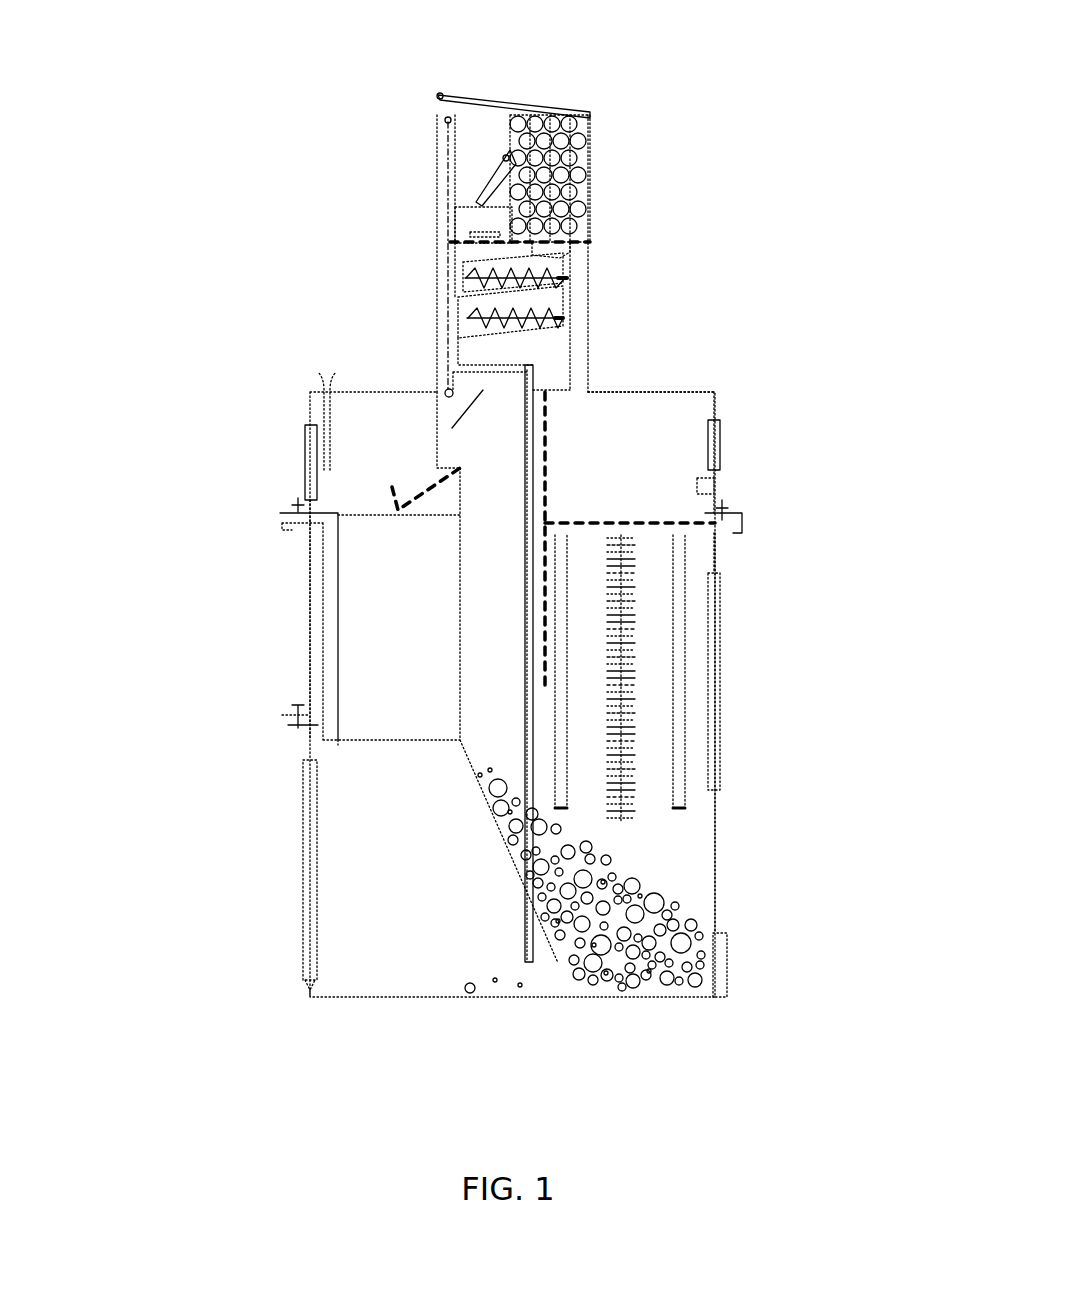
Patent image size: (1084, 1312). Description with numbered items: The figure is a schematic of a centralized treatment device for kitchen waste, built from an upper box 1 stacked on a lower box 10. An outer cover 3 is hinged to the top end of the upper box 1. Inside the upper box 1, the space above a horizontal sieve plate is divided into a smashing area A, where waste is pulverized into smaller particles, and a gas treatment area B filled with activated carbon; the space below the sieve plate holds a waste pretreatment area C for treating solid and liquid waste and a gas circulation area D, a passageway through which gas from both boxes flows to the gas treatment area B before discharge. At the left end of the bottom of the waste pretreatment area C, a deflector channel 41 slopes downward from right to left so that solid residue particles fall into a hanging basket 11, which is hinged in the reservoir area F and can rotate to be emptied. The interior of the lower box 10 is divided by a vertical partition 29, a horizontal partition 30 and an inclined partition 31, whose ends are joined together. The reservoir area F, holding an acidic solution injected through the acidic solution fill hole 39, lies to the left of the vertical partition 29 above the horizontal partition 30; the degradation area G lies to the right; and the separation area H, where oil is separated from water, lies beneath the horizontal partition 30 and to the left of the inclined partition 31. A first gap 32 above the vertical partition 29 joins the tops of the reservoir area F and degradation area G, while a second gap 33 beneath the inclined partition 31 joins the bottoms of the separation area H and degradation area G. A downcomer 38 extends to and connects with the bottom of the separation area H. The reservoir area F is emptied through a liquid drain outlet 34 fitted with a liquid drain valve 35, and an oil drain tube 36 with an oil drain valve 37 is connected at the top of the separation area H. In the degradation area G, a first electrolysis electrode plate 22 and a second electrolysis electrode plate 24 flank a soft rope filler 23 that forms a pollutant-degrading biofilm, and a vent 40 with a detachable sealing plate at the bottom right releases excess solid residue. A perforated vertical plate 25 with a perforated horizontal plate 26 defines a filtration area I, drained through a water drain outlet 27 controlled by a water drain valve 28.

The upper box 1 is at (437, 197).
The smashing area A is at (470, 162).
The outer cover 3 is at (485, 100).
The gas treatment area B is at (590, 182).
The gas circulation area D is at (577, 280).
The waste pretreatment area C is at (548, 355).
The vertical plate 25 is at (545, 447).
The filtration area I is at (625, 420).
The horizontal plate 26 is at (590, 523).
The water drain valve 28 is at (727, 500).
The water drain outlet 27 is at (745, 522).
The second electrolysis electrode plate 24 is at (680, 800).
The first electrolysis electrode plate 22 is at (560, 815).
The soft rope filler 23 is at (621, 822).
The vent 40 is at (727, 960).
The degradation area G is at (685, 860).
The deflector channel 41 is at (450, 397).
The first gap 32 is at (460, 445).
The hanging basket 11 is at (427, 490).
The acidic solution fill hole 39 is at (320, 373).
The oil drain valve 37 is at (297, 507).
The oil drain tube 36 is at (325, 582).
The reservoir area F is at (397, 588).
The vertical partition 29 is at (460, 635).
The liquid drain valve 35 is at (296, 712).
The liquid drain outlet 34 is at (290, 733).
The horizontal partition 30 is at (378, 742).
The lower box 10 is at (312, 1000).
The separation area H is at (390, 905).
The inclined partition 31 is at (510, 852).
The downcomer 38 is at (528, 927).
The second gap 33 is at (530, 972).